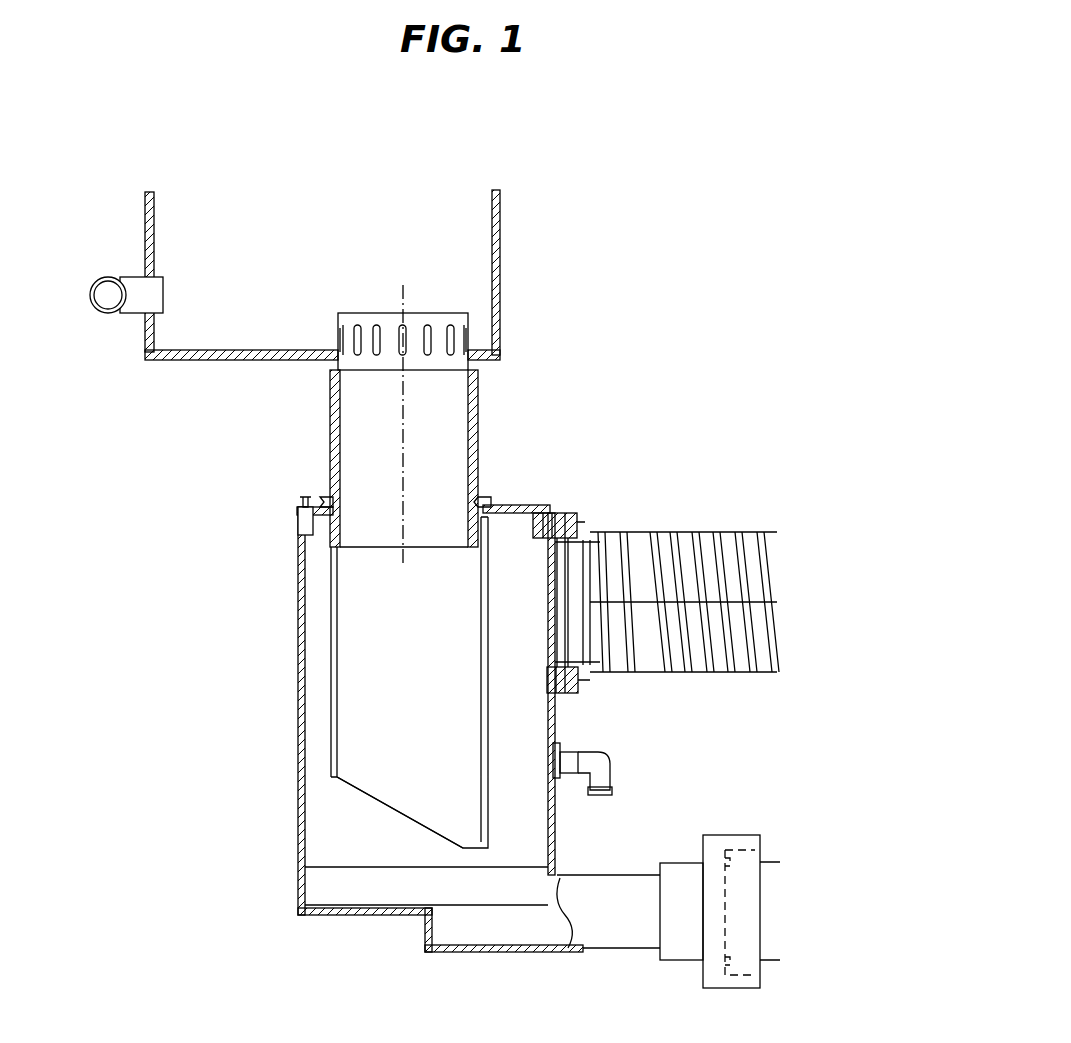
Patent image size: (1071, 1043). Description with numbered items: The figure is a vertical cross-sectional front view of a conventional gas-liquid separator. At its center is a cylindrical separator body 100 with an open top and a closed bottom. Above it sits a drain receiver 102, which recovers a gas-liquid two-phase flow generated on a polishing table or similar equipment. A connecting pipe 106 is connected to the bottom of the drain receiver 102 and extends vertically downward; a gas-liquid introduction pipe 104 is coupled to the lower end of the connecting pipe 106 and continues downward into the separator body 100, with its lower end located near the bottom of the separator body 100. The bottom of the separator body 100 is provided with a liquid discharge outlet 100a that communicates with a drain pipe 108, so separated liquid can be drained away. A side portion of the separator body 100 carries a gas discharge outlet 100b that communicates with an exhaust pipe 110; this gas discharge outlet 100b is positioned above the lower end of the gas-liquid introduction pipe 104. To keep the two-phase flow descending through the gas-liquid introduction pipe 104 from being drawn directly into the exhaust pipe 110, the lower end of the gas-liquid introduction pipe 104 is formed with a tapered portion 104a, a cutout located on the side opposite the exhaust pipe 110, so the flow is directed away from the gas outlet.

The separator body 100 is at (298, 650).
The liquid discharge outlet 100a is at (505, 908).
The gas discharge outlet 100b is at (547, 562).
The drain receiver 102 is at (493, 218).
The gas-liquid introduction pipe 104 is at (340, 630).
The tapered portion 104a is at (372, 795).
The connecting pipe 106 is at (473, 392).
The drain pipe 108 is at (628, 950).
The exhaust pipe 110 is at (697, 672).